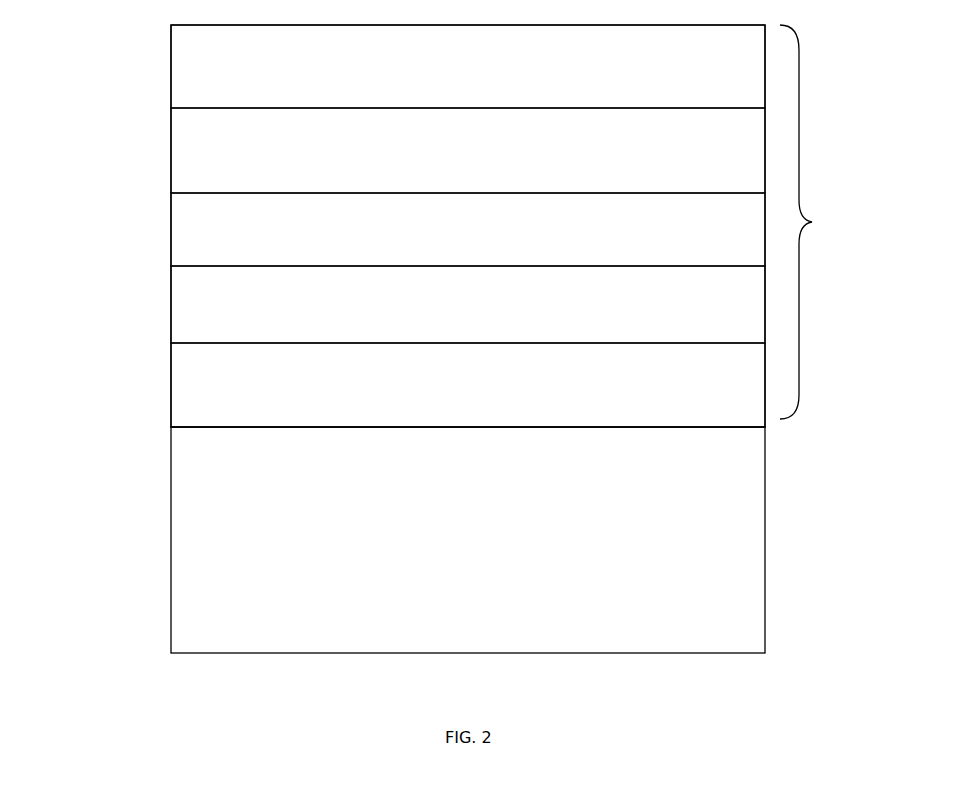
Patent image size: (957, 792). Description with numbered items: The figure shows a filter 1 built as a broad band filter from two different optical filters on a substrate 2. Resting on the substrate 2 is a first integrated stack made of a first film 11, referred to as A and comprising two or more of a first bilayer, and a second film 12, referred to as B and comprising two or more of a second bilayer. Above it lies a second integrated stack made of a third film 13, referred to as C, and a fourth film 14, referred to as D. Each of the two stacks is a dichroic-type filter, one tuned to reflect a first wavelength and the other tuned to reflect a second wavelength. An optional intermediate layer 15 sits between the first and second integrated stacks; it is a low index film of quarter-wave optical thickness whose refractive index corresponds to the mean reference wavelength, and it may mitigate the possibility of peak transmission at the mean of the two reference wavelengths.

The filter 1 is at (812, 222).
The substrate 2 is at (171, 520).
The first film 11 is at (171, 376).
The second film 12 is at (171, 310).
The third film 13 is at (171, 153).
The fourth film 14 is at (171, 67).
The intermediate layer 15 is at (171, 231).